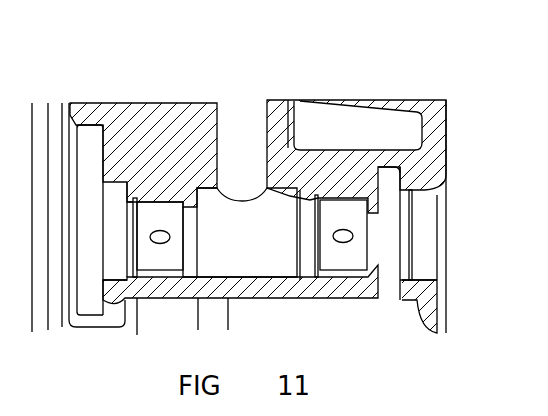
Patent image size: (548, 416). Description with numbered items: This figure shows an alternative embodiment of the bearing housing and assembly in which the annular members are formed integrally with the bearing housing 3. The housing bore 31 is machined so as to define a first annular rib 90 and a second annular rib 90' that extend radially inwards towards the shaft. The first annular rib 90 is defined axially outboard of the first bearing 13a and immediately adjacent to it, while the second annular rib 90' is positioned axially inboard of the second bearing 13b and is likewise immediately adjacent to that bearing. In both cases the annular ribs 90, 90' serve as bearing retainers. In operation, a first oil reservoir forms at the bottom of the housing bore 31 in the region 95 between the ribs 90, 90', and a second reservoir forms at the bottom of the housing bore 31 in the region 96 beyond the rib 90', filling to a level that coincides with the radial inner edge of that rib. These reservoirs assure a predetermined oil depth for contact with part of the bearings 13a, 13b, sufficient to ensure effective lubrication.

The bearing housing 3 is at (128, 130).
The first bearing 13a is at (346, 200).
The second bearing 13b is at (173, 203).
The housing bore 31 is at (283, 298).
The first annular rib 90 is at (437, 235).
The second annular rib 90' is at (195, 211).
The first oil reservoir region 95 is at (252, 258).
The second oil reservoir region 96 is at (165, 265).